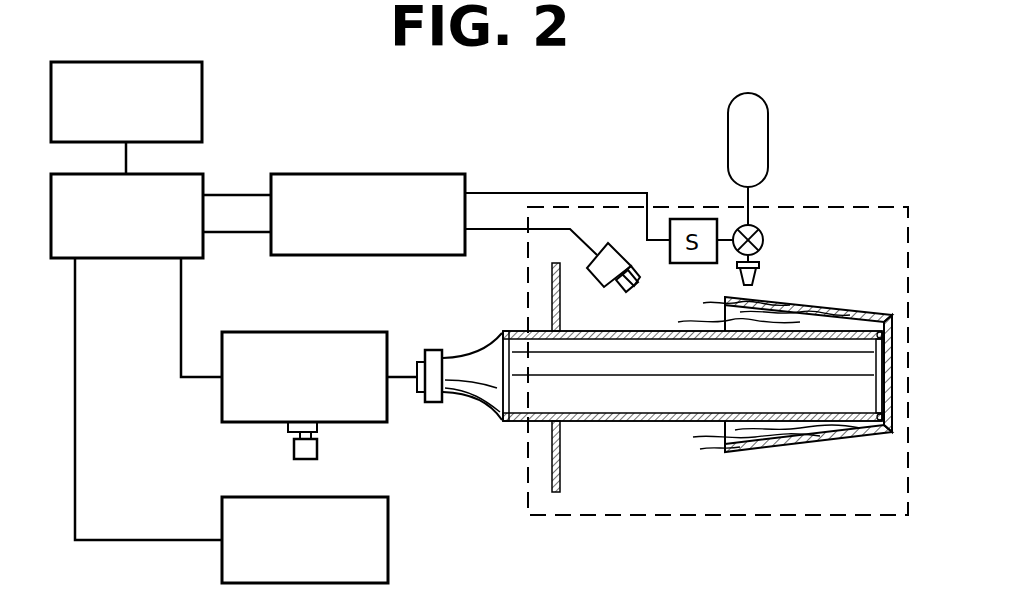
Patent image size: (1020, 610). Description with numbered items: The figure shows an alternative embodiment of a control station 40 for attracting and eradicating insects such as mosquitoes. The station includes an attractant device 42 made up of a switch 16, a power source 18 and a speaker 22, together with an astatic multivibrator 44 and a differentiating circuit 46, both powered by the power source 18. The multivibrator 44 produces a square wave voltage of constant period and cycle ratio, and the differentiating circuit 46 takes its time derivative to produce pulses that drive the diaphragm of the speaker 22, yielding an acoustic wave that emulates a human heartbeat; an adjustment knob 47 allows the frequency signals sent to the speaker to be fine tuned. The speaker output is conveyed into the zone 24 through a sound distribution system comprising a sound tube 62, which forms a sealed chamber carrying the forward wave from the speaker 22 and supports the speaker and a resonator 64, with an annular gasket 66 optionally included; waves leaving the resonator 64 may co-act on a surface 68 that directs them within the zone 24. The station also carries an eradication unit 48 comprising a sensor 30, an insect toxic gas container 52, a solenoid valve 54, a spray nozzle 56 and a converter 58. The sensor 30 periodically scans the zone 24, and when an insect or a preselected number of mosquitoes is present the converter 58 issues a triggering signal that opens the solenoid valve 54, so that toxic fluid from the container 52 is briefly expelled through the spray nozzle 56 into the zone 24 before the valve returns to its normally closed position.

The switch 16 is at (77, 72).
The power source 18 is at (192, 190).
The control station 40 is at (284, 144).
The converter 58 is at (407, 187).
The eradication unit 48 is at (608, 186).
The insect toxic gas container 52 is at (752, 122).
The zone 24 is at (852, 206).
The solenoid valve 54 is at (764, 243).
The spray nozzle 56 is at (758, 278).
The sensor 30 is at (605, 272).
The surface 68 is at (562, 455).
The speaker 22 is at (468, 373).
The sound tube 62 is at (645, 390).
The resonator 64 is at (886, 315).
The annular gasket 66 is at (876, 362).
The differentiating circuit 46 is at (370, 342).
The adjustment knob 47 is at (290, 452).
The astatic multivibrator 44 is at (388, 530).
The attractant device 42 is at (177, 548).